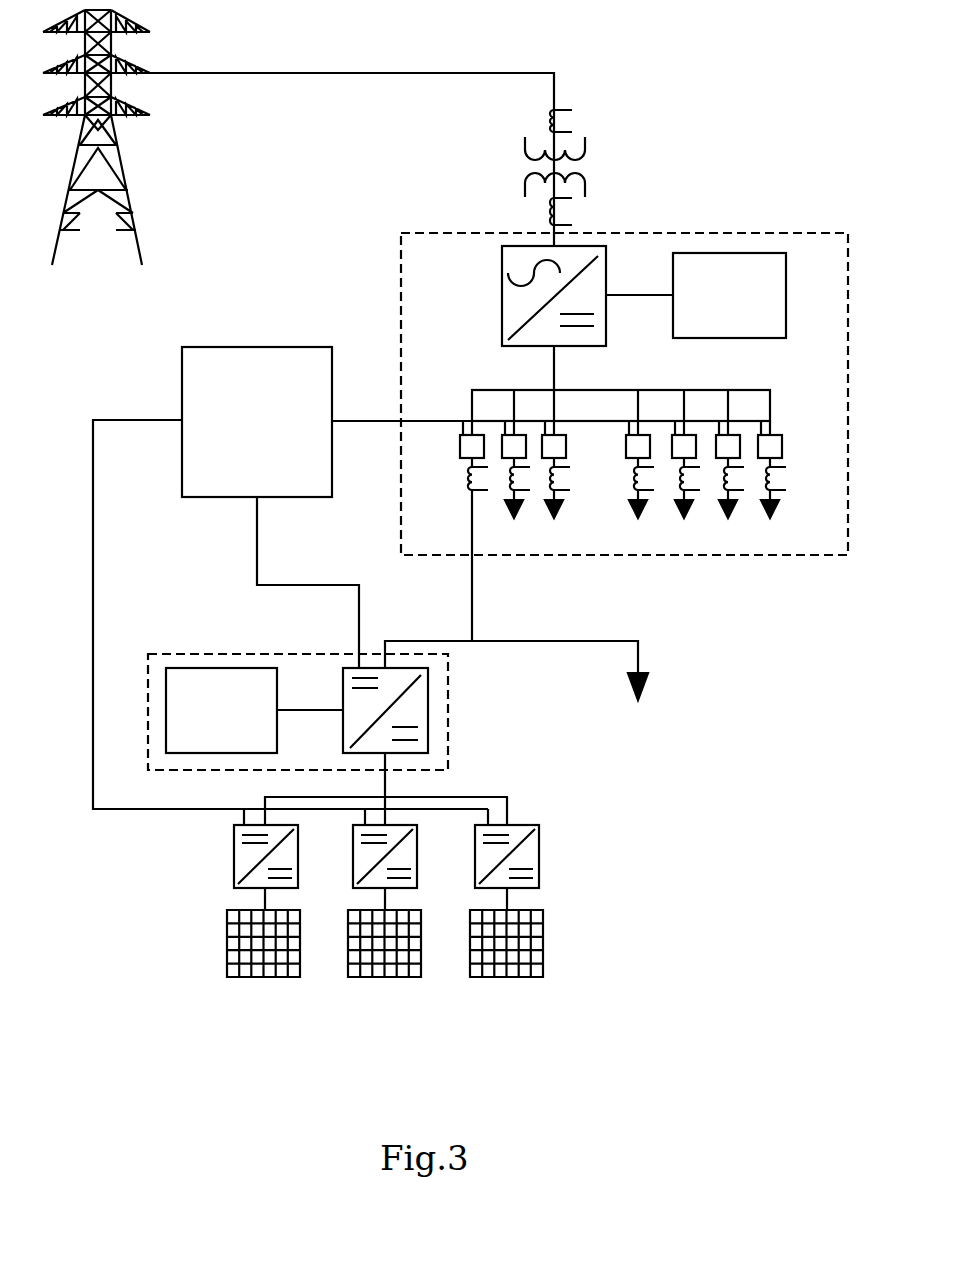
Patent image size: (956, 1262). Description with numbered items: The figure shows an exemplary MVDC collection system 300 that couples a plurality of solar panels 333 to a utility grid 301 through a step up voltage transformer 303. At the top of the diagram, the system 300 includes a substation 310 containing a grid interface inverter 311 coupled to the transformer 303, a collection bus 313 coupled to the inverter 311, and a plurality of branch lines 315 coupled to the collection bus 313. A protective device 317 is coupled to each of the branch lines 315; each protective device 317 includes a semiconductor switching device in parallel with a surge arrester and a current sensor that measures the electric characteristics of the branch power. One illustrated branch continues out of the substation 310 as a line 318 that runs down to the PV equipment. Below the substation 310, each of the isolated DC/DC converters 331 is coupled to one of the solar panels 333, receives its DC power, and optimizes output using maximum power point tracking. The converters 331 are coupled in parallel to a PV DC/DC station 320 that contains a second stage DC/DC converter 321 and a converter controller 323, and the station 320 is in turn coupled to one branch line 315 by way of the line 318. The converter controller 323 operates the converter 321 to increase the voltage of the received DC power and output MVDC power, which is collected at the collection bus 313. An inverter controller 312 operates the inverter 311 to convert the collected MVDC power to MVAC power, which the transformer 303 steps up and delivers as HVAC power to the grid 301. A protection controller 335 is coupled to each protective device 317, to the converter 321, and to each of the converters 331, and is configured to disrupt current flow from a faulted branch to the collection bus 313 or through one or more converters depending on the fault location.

The MVDC collection system 300 is at (661, 975).
The utility grid 301 is at (150, 32).
The step up voltage transformer 303 is at (585, 142).
The substation 310 is at (775, 233).
The grid interface inverter 311 is at (502, 262).
The inverter controller 312 is at (696, 295).
The collection bus 313 is at (497, 390).
The branch lines 315 is at (470, 398).
The protective device 317 is at (447, 449).
The DC transmission line 318 is at (473, 586).
The PV DC/DC station 320 is at (295, 654).
The second stage DC/DC converter 321 is at (343, 685).
The converter controller 323 is at (254, 710).
The isolated DC/DC converters 331 is at (234, 840).
The solar panels 333 is at (505, 1008).
The protection controller 335 is at (290, 578).